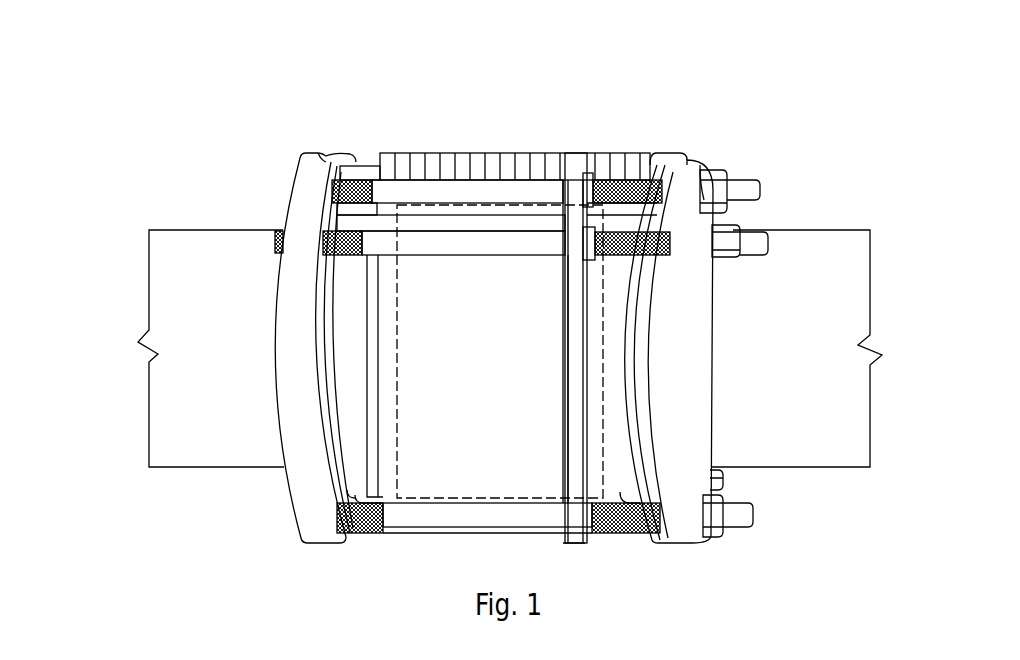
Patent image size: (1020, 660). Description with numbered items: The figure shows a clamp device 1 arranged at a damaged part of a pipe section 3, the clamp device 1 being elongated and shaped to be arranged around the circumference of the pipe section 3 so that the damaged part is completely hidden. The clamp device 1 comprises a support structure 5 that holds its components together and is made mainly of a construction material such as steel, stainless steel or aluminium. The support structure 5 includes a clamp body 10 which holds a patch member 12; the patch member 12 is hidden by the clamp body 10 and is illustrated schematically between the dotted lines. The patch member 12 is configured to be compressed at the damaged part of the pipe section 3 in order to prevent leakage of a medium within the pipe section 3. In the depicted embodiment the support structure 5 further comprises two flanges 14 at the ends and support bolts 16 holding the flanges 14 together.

The clamp device 1 is at (263, 70).
The pipe section 3 is at (213, 256).
The support structure 5 is at (263, 145).
The clamp body 10 is at (383, 347).
The patch member 12 is at (487, 335).
The flanges 14 is at (313, 188).
The support bolts 16 is at (617, 162).